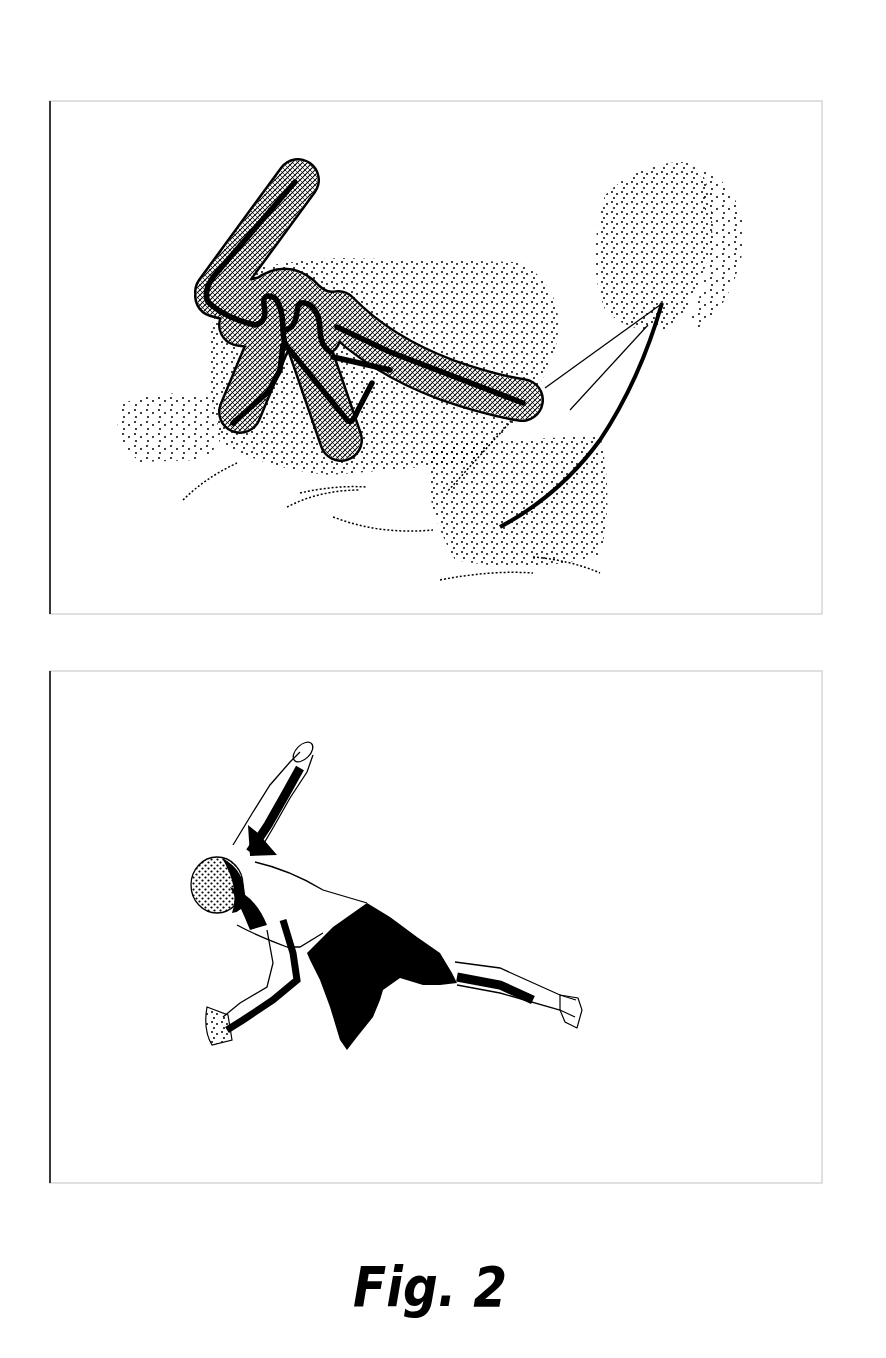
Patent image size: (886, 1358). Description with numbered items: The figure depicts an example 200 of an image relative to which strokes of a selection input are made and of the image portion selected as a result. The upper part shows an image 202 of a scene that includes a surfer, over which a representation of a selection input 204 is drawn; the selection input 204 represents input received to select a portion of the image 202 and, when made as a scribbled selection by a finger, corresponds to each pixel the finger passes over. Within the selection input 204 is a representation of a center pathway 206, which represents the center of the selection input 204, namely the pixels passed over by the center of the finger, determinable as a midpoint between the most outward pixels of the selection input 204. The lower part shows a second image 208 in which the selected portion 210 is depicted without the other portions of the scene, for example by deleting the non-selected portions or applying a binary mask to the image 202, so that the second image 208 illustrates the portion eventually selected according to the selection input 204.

The example 200 is at (123, 84).
The image 202 is at (436, 357).
The selection input 204 is at (300, 173).
The center pathway 206 is at (252, 278).
The second image 208 is at (436, 927).
The selected portion 210 is at (220, 848).